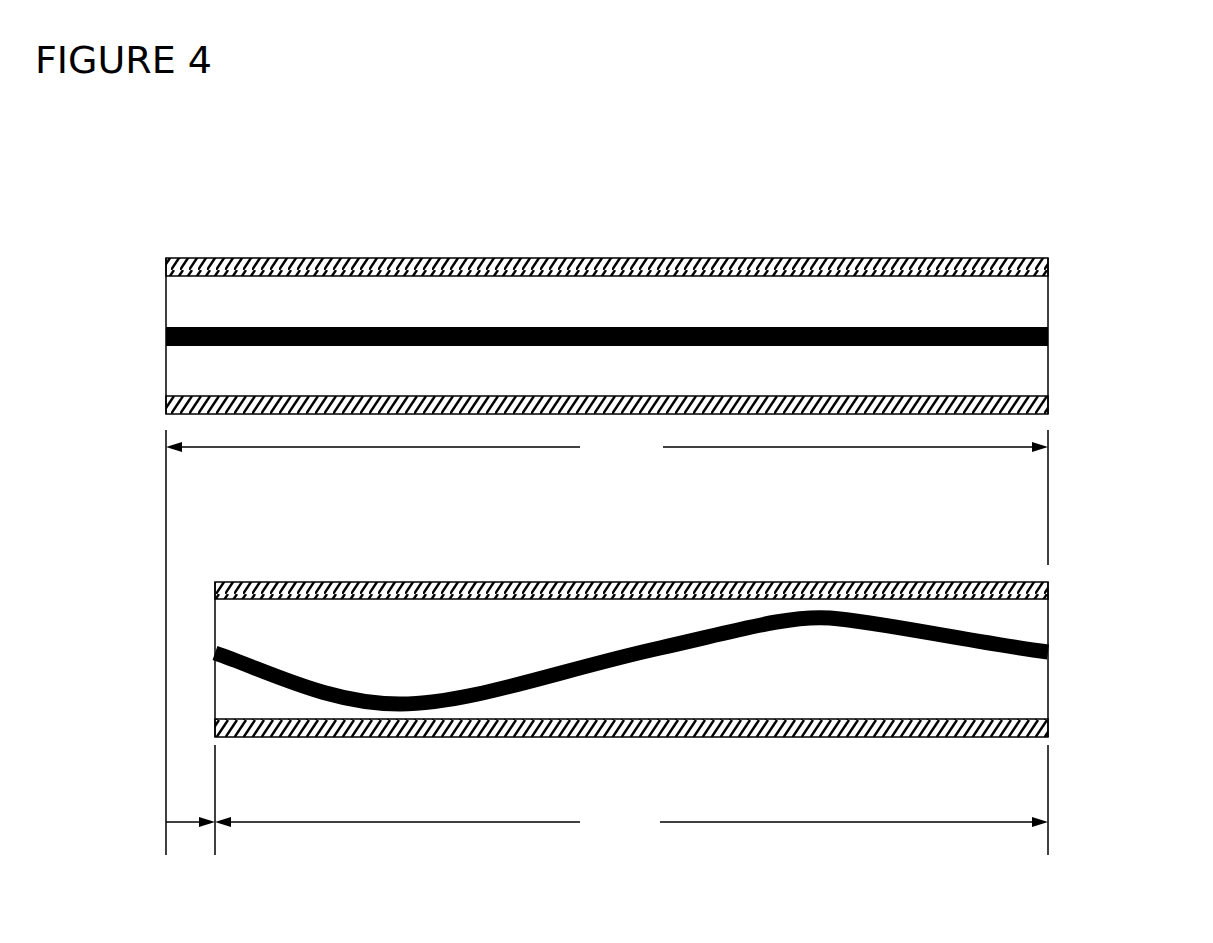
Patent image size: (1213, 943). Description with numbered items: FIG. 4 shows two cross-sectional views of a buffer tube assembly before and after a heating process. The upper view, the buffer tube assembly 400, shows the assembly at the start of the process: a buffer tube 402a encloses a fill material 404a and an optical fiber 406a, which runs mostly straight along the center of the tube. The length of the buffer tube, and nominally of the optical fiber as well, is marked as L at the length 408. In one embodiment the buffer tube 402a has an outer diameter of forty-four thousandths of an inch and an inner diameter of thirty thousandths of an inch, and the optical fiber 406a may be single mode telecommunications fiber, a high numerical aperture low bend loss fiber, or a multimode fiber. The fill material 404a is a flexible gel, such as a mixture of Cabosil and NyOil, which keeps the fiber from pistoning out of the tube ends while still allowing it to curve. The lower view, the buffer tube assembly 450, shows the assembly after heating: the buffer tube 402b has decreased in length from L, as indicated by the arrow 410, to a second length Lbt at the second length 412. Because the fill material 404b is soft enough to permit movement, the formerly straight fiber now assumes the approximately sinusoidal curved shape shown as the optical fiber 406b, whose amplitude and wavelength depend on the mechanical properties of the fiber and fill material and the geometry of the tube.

The cross-sectional view of buffer tube assembly 400 is at (657, 255).
The buffer tube 402a is at (353, 407).
The fill material 404a is at (611, 386).
The optical fiber 406a is at (838, 330).
The length L 408 is at (612, 456).
The cross-sectional view of buffer tube assembly after decrease in length 450 is at (697, 613).
The buffer tube 402b is at (324, 719).
The fill material 404b is at (645, 690).
The optical fiber in curved shape 406b is at (870, 622).
The arrow indicating length decrease 410 is at (191, 822).
The second length Lbt 412 is at (607, 832).